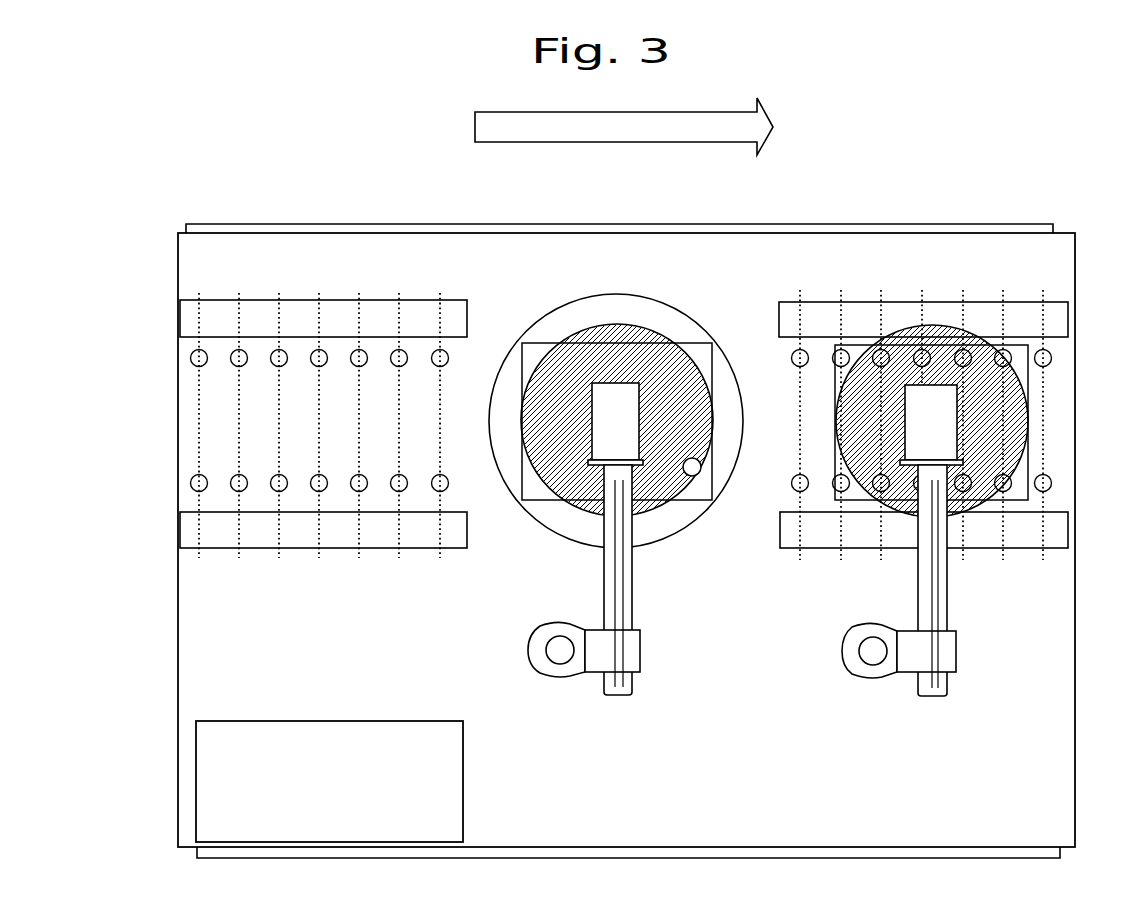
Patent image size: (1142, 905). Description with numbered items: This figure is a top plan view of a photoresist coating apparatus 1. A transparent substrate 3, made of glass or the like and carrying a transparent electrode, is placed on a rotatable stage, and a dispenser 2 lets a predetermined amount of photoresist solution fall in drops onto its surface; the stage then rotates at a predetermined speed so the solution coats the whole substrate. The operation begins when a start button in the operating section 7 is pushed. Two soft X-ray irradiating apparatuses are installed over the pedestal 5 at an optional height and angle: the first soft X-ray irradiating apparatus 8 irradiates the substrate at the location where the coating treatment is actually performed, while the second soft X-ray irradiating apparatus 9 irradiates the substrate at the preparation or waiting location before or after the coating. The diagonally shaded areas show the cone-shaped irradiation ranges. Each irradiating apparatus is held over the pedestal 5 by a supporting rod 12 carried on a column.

The photoresist coating apparatus 1 is at (1030, 222).
The dispenser 2 is at (692, 467).
The transparent substrate 3 is at (712, 343).
The pedestal 5 is at (1057, 695).
The operating section 7 is at (312, 802).
The first soft X-ray irradiating apparatus 8 is at (622, 405).
The second soft X-ray irradiating apparatus 9 is at (925, 410).
The supporting rod 12 is at (632, 575).